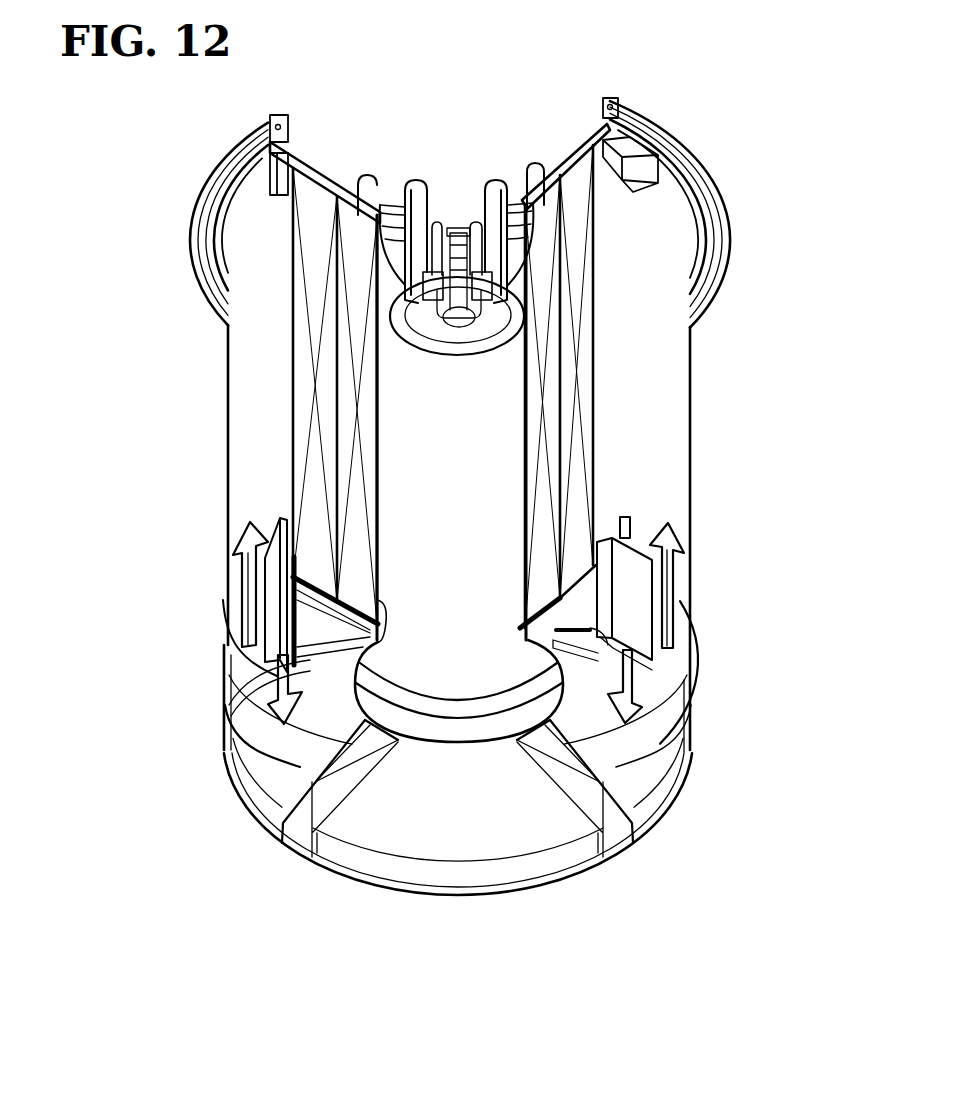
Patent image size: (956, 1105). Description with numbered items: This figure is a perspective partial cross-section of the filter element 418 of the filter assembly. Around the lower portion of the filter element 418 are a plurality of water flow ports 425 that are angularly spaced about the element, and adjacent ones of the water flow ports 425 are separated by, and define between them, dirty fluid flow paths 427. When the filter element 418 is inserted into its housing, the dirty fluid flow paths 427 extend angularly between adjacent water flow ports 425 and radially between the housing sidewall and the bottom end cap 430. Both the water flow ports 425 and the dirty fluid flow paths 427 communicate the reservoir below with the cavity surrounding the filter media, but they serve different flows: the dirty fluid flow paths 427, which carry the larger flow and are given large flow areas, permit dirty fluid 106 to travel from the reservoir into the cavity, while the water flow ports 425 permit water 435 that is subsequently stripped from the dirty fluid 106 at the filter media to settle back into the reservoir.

The filter element 418 is at (178, 424).
The dirty fluid 106 is at (243, 533).
The water flow ports 425 is at (265, 648).
The dirty fluid flow paths 427 is at (715, 674).
The bottom end cap 430 is at (463, 833).
The water 435 is at (310, 705).